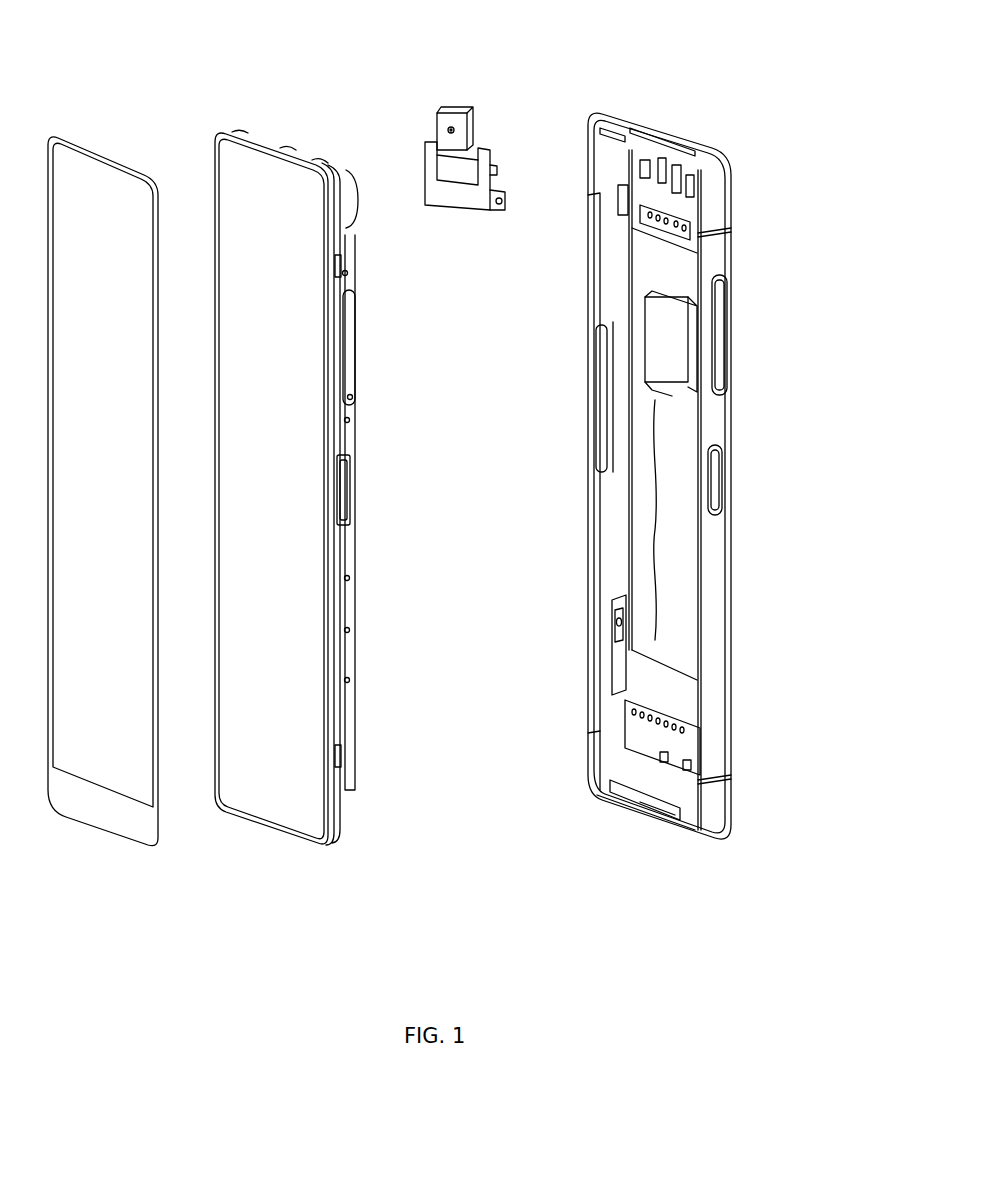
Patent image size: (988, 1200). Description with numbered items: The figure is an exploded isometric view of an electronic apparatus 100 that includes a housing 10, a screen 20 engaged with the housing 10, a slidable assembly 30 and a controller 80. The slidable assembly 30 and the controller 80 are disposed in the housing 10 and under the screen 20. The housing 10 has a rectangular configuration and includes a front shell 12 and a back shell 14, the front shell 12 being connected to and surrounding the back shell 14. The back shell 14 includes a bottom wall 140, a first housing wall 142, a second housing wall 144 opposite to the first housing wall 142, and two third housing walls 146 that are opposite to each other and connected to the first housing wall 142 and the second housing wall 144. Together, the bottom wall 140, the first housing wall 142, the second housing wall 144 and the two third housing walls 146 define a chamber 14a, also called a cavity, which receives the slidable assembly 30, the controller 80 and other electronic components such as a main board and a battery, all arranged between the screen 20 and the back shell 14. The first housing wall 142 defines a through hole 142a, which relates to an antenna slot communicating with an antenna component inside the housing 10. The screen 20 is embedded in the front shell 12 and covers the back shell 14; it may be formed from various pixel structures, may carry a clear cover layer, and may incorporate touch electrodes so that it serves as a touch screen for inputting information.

The electronic apparatus 100 is at (431, 499).
The housing 10 is at (500, 930).
The front shell 12 is at (333, 845).
The back shell 14 is at (592, 793).
The chamber 14a is at (683, 640).
The screen 20 is at (105, 750).
The slidable assembly 30 is at (452, 104).
The controller 80 is at (683, 340).
The bottom wall 140 is at (661, 496).
The first housing wall 142 is at (630, 164).
The through hole 142a is at (627, 120).
The second housing wall 144 is at (667, 830).
The third housing walls 146 is at (600, 552).